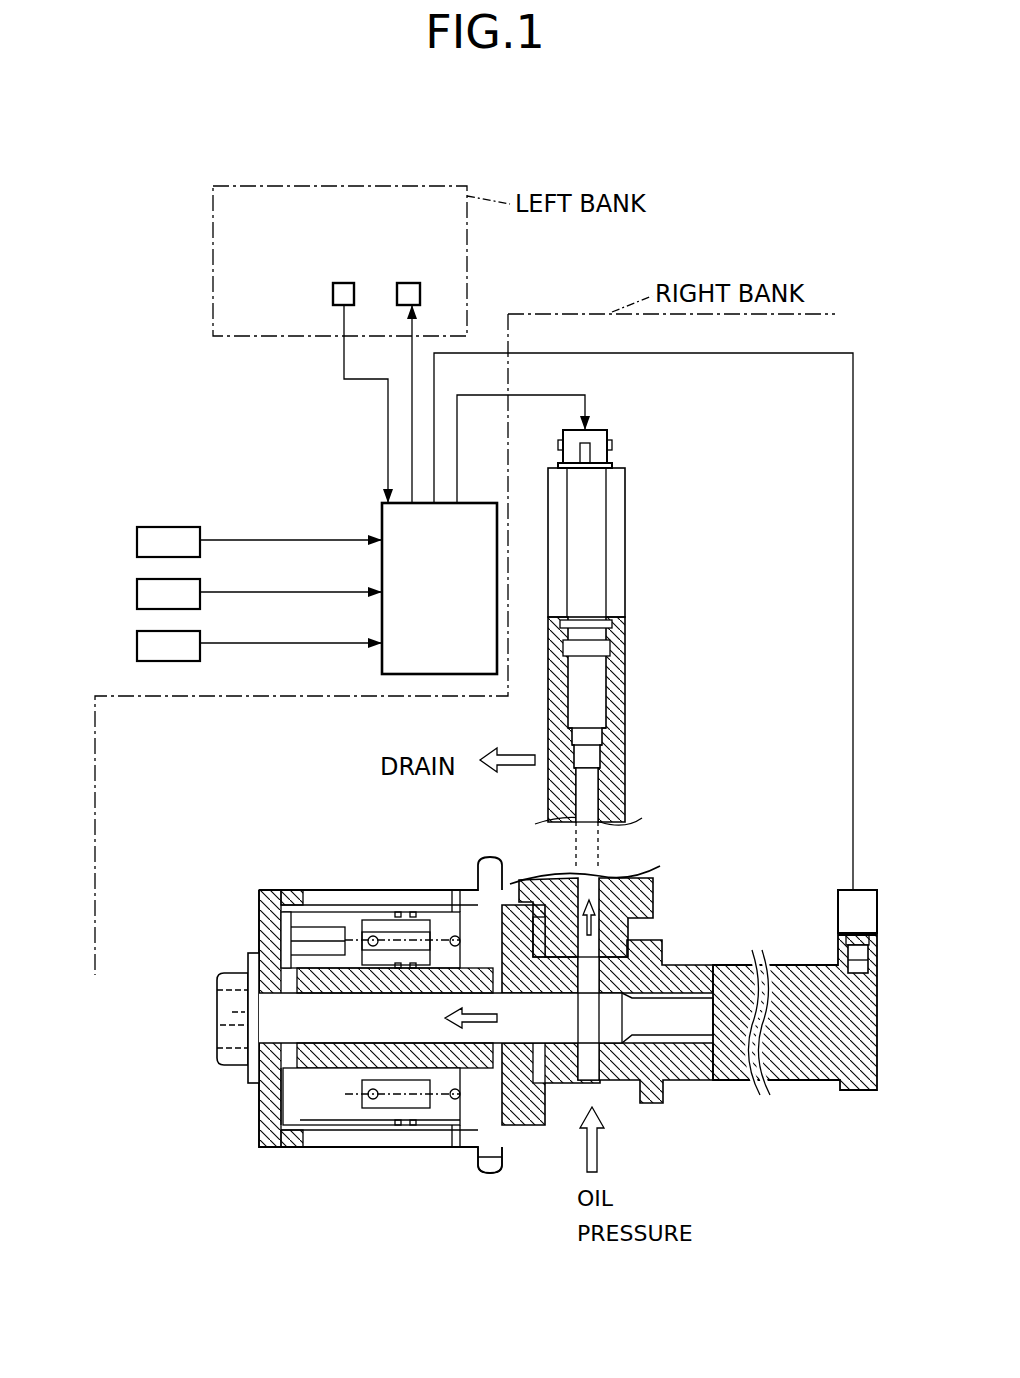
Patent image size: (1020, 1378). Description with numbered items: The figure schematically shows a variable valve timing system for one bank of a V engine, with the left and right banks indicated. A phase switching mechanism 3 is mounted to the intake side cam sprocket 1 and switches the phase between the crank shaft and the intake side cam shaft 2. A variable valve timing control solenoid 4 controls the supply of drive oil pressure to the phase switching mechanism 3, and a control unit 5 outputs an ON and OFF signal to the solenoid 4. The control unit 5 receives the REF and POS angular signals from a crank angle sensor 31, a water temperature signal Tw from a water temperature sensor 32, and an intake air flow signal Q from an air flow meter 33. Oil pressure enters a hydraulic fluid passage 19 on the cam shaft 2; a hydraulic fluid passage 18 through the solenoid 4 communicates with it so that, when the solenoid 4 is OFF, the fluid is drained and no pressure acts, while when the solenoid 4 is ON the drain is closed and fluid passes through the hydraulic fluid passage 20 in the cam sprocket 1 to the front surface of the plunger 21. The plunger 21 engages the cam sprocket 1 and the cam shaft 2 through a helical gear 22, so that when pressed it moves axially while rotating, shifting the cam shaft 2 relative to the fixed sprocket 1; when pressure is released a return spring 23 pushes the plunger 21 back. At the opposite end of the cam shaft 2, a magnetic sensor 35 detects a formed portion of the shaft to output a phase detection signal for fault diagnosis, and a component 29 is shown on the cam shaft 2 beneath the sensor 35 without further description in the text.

The intake side cam sprocket 1 is at (494, 1174).
The intake side cam shaft 2 is at (726, 1058).
The phase switching mechanism 3 is at (298, 880).
The variable valve timing control solenoid 4 is at (408, 283).
The control unit 5 is at (478, 503).
The hydraulic fluid passage 18 is at (592, 796).
The hydraulic fluid passage 19 is at (566, 1035).
The hydraulic fluid passage 20 is at (262, 1022).
The plunger 21 is at (290, 930).
The helical gear 22 is at (343, 962).
The return spring 23 is at (392, 1100).
The sensor element 29 is at (848, 958).
The crank angle sensor 31 is at (137, 541).
The water temperature sensor 32 is at (137, 594).
The air flow meter 33 is at (137, 646).
The magnetic sensor 35 is at (344, 283).